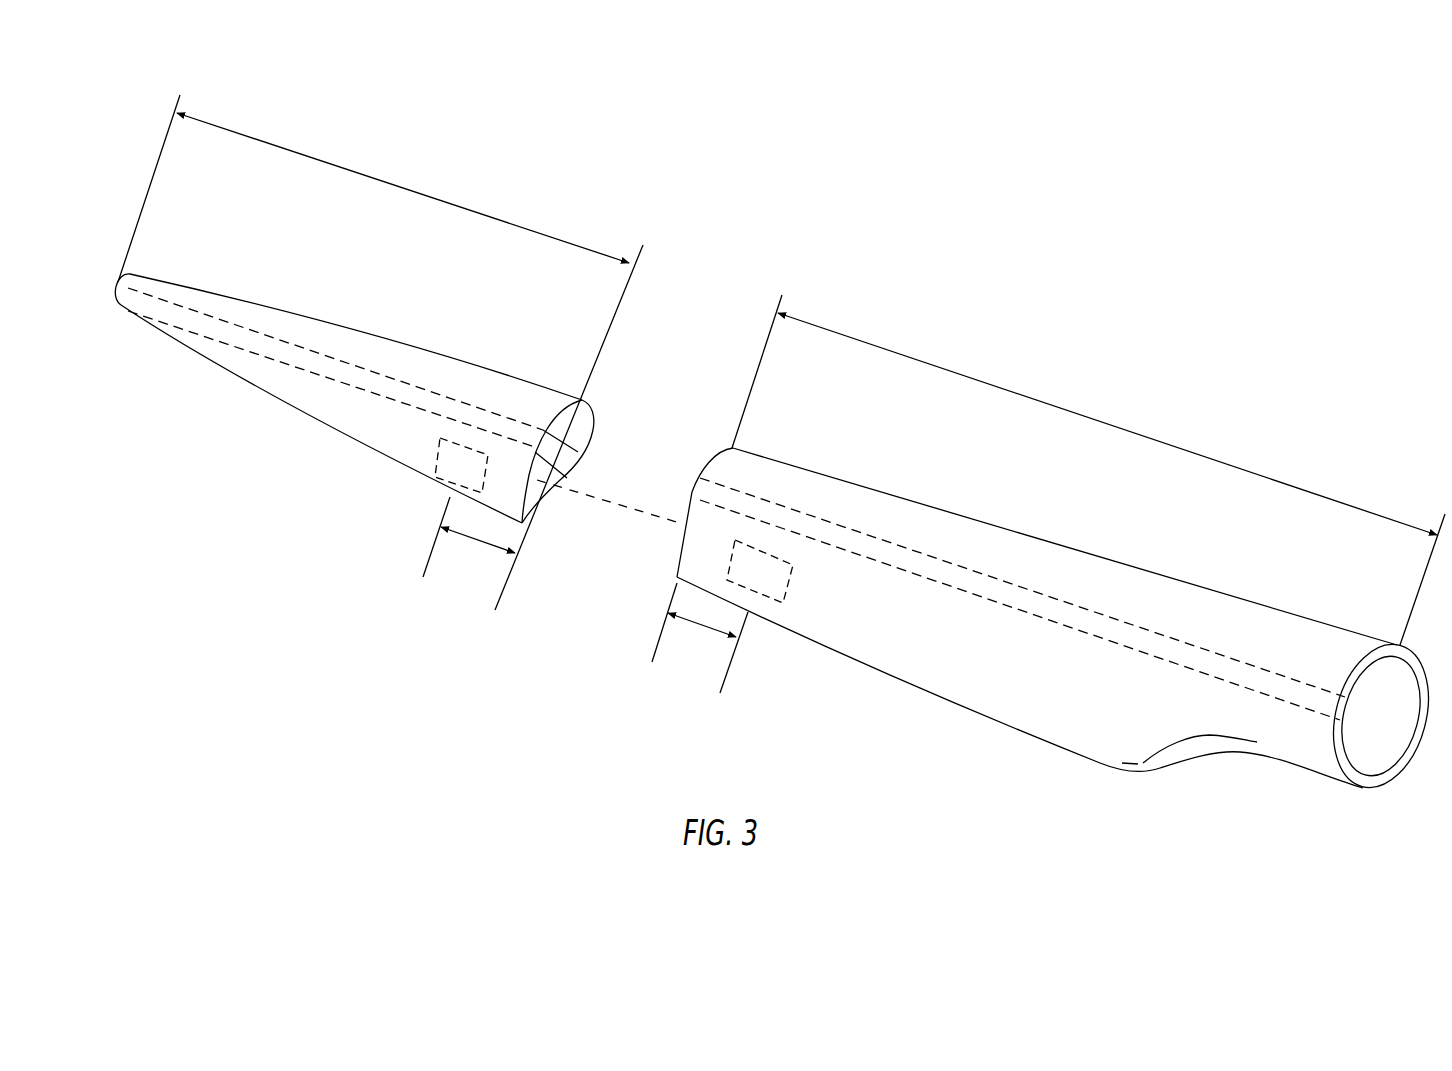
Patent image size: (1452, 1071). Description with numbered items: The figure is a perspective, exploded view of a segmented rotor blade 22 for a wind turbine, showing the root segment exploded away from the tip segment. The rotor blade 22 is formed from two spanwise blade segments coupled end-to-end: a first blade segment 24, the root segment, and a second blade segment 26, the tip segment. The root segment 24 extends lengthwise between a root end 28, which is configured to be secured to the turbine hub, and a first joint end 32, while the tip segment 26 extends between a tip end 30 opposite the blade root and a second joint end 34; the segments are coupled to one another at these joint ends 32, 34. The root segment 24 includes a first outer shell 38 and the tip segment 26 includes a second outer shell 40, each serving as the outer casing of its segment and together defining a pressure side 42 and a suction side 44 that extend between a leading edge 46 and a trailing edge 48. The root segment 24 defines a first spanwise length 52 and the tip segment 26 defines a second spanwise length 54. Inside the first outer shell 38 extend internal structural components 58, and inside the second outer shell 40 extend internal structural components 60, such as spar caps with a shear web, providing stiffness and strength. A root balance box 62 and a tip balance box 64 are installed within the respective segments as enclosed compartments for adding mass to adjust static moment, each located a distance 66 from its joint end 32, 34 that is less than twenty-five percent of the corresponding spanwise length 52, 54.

The segmented rotor blade 22 is at (1248, 241).
The first blade segment 24 is at (1073, 523).
The second blade segment 26 is at (378, 319).
The root end 28 is at (1367, 788).
The tip end 30 is at (118, 288).
The first joint end 32 is at (708, 462).
The second joint end 34 is at (585, 447).
The first outer shell 38 is at (997, 530).
The second outer shell 40 is at (320, 322).
The pressure side 42 is at (533, 508).
The suction side 44 is at (548, 402).
The leading edge 46 is at (443, 356).
The trailing edge 48 is at (300, 418).
The first spanwise length 52 is at (1140, 435).
The second spanwise length 54 is at (445, 203).
The internal structural components 58 is at (843, 527).
The internal structural components 60 is at (188, 302).
The root balance box 62 is at (785, 592).
The tip balance box 64 is at (435, 460).
The distance 66 is at (475, 548).